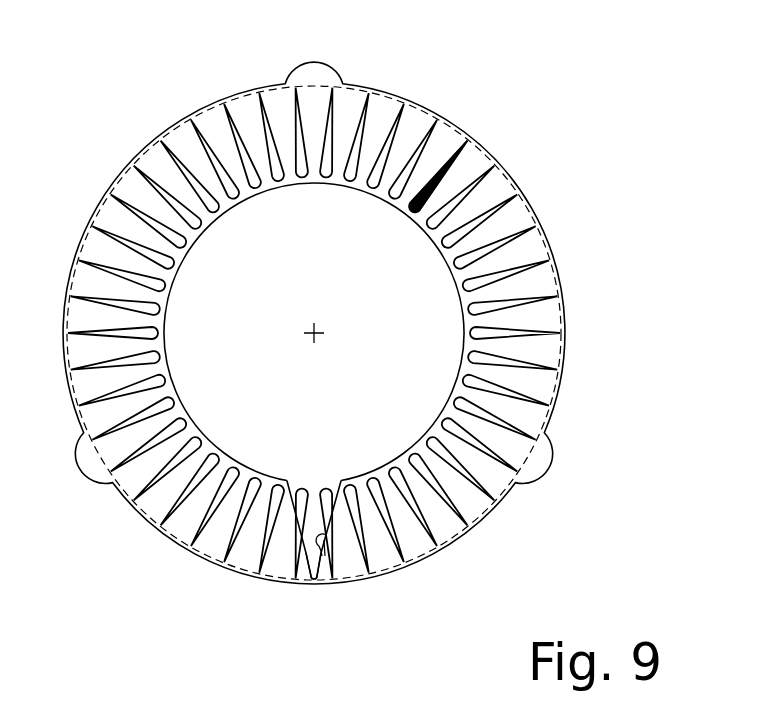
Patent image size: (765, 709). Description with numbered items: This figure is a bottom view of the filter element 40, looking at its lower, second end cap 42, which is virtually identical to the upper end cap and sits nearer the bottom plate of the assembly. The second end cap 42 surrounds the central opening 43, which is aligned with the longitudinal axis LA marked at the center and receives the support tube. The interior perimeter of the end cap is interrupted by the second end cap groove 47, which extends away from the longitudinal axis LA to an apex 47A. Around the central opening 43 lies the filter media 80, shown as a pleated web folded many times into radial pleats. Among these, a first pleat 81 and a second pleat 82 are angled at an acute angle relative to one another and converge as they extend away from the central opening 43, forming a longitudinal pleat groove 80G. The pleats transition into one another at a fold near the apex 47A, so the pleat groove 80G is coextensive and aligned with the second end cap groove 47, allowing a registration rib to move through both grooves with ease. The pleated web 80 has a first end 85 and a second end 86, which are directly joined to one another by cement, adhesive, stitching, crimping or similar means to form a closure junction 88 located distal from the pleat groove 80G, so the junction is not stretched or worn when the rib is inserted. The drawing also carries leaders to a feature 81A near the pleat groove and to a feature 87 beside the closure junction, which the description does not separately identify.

The filter element 40 is at (356, 327).
The second end cap 42 is at (120, 104).
The central opening 43 is at (262, 292).
The longitudinal axis LA is at (315, 332).
The second end cap groove 47 is at (323, 457).
The apex of second end cap groove 47A is at (325, 527).
The filter media 80 is at (550, 326).
The longitudinal pleat groove 80G is at (325, 556).
The first pleat 81 is at (304, 540).
The hook end 81A is at (318, 548).
The second pleat 82 is at (322, 558).
The first end 85 is at (459, 146).
The second end 86 is at (458, 162).
The slot fill region 87 is at (468, 148).
The closure junction 88 is at (449, 140).